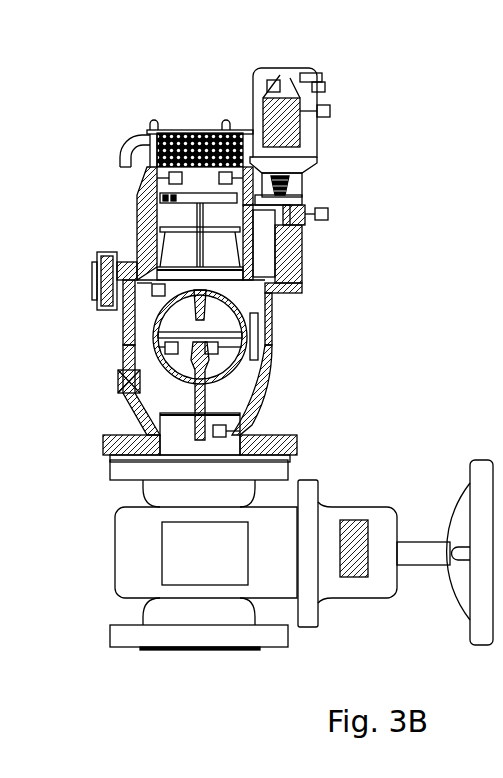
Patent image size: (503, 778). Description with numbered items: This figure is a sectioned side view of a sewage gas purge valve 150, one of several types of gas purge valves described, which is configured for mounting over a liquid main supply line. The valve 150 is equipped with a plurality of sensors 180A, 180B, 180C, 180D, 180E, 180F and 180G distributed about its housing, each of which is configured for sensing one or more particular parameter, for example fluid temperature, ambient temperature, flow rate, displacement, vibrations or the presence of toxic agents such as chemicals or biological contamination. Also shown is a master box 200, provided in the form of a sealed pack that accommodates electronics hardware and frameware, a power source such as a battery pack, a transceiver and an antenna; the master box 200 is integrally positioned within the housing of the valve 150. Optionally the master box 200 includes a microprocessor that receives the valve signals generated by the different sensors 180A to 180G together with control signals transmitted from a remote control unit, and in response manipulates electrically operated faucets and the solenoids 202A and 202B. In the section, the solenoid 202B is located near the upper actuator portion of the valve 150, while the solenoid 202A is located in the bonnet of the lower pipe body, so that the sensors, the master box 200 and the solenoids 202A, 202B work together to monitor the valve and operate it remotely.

The gas purge valve 150 is at (382, 126).
The master box 200 is at (275, 326).
The sensor 180A is at (128, 260).
The sensor 180B is at (258, 350).
The sensor 180C is at (163, 347).
The sensor 180D is at (168, 130).
The sensor 180E is at (214, 163).
The sensor 180F is at (286, 68).
The sensor 180G is at (329, 214).
The solenoid 202A is at (354, 518).
The solenoid 202B is at (302, 190).